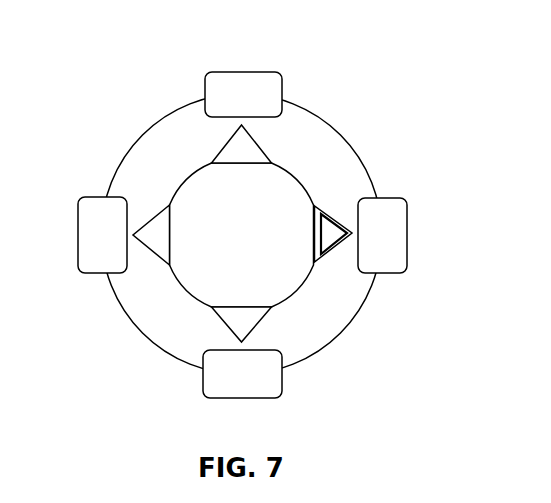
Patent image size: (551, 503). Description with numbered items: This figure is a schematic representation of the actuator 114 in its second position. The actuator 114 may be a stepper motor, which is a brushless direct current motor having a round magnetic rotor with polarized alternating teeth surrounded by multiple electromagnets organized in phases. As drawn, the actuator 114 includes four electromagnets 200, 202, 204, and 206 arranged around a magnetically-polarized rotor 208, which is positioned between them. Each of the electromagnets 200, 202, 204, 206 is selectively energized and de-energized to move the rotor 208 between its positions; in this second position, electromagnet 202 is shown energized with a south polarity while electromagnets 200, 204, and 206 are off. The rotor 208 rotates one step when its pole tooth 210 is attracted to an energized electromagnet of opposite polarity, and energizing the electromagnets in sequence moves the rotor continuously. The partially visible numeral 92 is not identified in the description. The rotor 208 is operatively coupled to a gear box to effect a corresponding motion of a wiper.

The actuator 114 is at (141, 57).
The electromagnet 200 is at (245, 72).
The electromagnet 202 is at (402, 198).
The electromagnet 204 is at (243, 398).
The electromagnet 206 is at (78, 253).
The magnetically-polarized rotor 208 is at (295, 178).
The pole tooth 210 is at (334, 252).
The housing 92 is at (9, 203).